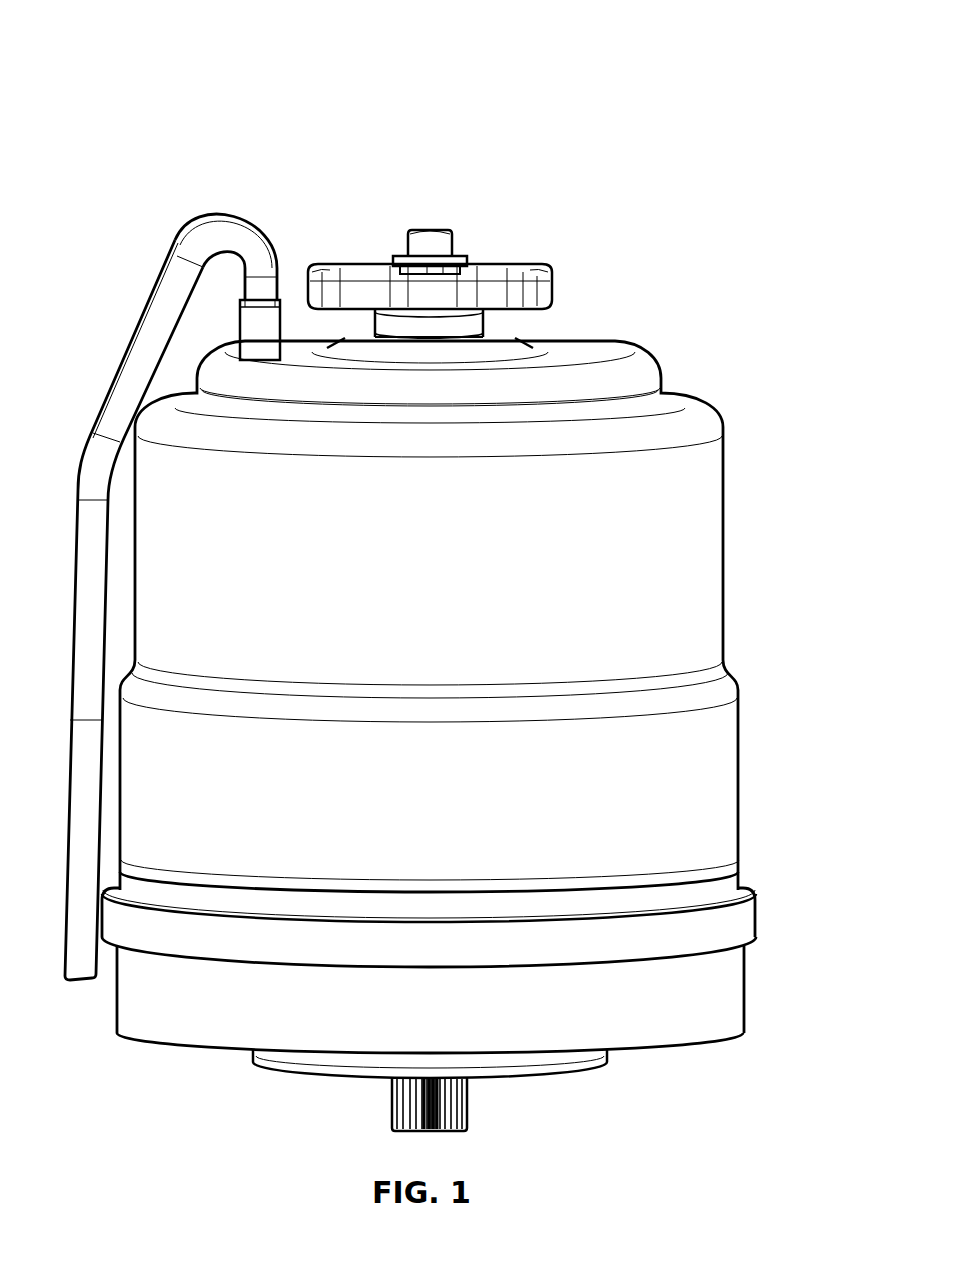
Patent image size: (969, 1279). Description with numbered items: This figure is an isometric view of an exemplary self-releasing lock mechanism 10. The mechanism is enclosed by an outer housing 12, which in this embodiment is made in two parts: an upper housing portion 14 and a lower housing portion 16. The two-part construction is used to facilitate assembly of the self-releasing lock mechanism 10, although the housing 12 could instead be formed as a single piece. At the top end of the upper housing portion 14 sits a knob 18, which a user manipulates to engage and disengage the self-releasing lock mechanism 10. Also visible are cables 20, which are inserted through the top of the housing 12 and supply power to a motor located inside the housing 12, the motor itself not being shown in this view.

The self-releasing lock mechanism 10 is at (118, 116).
The outer housing 12 is at (750, 472).
The upper housing portion 14 is at (707, 567).
The lower housing portion 16 is at (730, 1002).
The knob 18 is at (540, 289).
The cables 20 is at (152, 333).